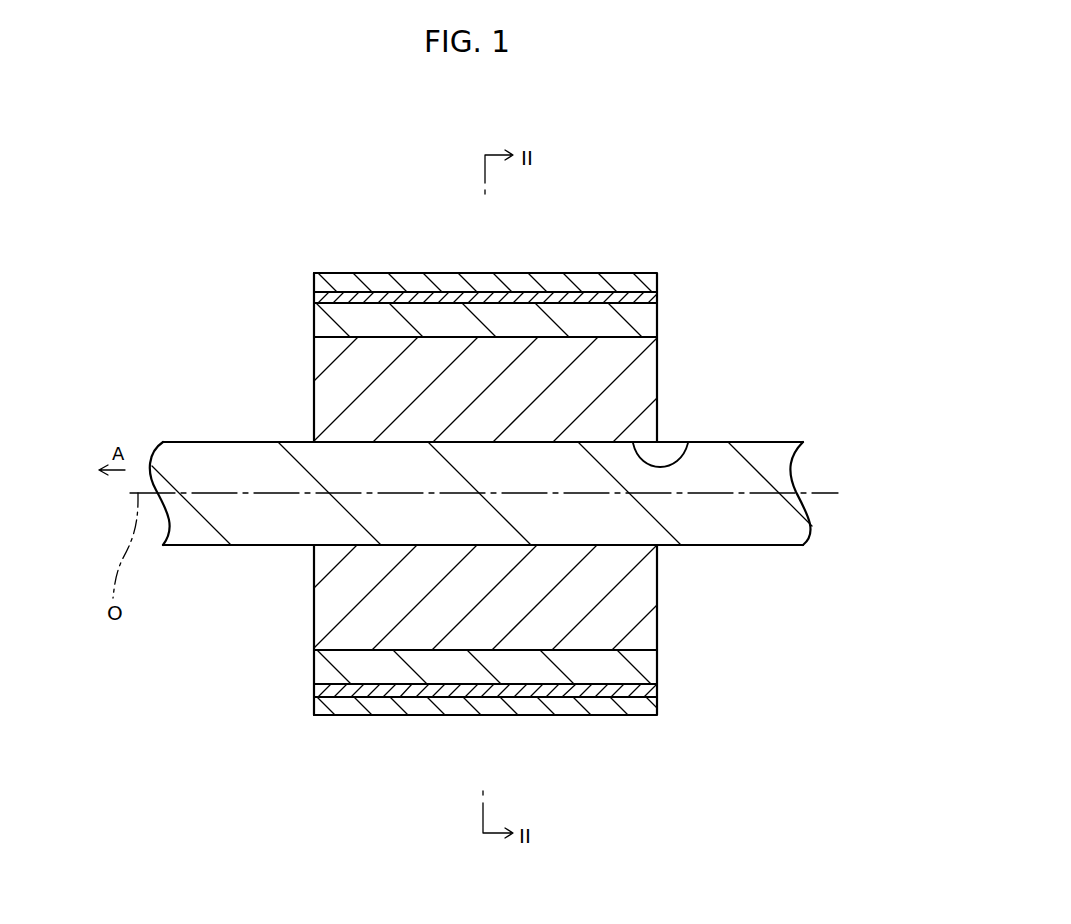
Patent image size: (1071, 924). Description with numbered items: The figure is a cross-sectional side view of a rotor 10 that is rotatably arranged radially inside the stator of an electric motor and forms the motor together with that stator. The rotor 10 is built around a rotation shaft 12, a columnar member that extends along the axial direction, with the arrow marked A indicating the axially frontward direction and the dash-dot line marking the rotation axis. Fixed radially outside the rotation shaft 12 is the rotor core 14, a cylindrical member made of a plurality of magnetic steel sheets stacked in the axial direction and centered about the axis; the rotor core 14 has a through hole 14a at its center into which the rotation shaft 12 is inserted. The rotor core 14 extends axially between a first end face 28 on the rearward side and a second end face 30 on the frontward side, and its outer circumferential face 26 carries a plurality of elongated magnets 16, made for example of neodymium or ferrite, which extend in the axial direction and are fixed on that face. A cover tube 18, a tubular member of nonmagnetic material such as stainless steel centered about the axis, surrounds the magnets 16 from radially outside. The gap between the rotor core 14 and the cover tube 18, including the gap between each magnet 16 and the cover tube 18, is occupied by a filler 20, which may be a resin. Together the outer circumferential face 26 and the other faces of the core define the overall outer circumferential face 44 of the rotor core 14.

The rotor 10 is at (731, 176).
The rotation shaft 12 is at (214, 453).
The rotor core 14 is at (648, 372).
The through hole 14a is at (690, 444).
The magnets 16 is at (374, 322).
The cover tube 18 is at (550, 284).
The filler 20 is at (625, 298).
The outer circumferential face 26 is at (455, 322).
The first end face 28 is at (656, 588).
The second end face 30 is at (312, 608).
The outer circumferential face 44 is at (320, 327).